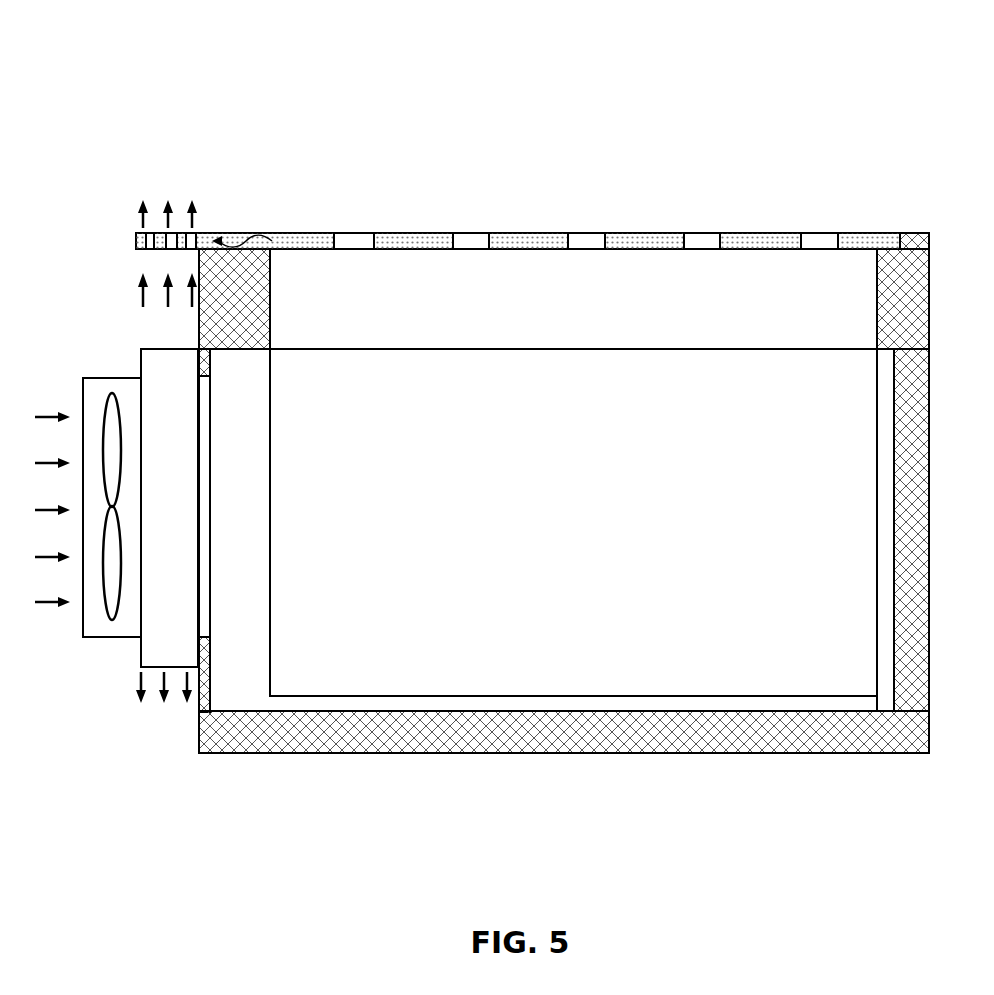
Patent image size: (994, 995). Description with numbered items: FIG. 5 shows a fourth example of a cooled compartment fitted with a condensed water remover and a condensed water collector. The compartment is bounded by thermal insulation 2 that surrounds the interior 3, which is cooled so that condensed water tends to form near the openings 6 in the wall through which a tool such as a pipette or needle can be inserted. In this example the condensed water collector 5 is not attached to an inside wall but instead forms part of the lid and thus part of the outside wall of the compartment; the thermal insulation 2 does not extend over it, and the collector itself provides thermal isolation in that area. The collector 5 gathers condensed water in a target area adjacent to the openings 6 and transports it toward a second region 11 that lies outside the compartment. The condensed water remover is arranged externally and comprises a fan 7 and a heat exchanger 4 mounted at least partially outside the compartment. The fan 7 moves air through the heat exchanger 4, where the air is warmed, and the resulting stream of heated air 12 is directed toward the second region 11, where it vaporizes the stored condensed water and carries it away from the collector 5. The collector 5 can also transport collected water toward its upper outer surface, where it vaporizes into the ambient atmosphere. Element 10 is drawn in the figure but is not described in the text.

The thermal insulation 2 is at (904, 297).
The interior 3 is at (507, 660).
The heat exchanger 4 is at (163, 647).
The condensed water collector 5 is at (519, 237).
The openings 6 is at (578, 246).
The fan 7 is at (95, 592).
The top cover plate 10 is at (333, 232).
The second region 11 is at (155, 220).
The stream of heated air 12 is at (130, 290).